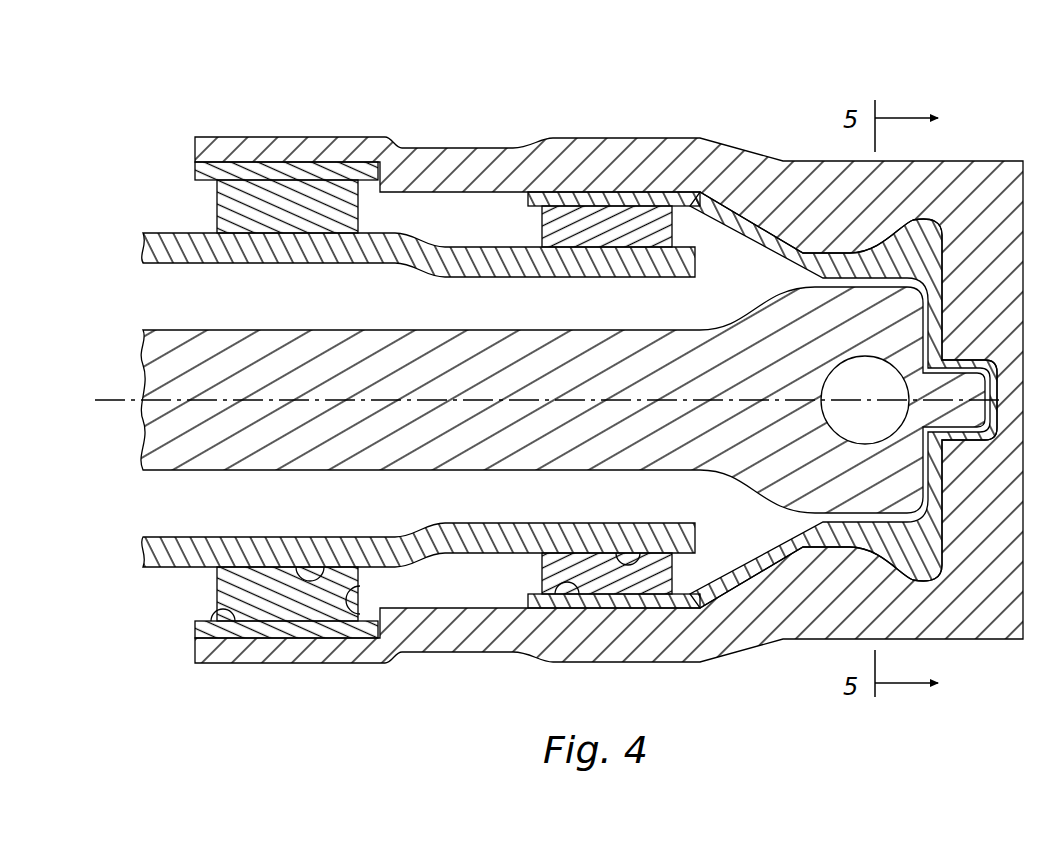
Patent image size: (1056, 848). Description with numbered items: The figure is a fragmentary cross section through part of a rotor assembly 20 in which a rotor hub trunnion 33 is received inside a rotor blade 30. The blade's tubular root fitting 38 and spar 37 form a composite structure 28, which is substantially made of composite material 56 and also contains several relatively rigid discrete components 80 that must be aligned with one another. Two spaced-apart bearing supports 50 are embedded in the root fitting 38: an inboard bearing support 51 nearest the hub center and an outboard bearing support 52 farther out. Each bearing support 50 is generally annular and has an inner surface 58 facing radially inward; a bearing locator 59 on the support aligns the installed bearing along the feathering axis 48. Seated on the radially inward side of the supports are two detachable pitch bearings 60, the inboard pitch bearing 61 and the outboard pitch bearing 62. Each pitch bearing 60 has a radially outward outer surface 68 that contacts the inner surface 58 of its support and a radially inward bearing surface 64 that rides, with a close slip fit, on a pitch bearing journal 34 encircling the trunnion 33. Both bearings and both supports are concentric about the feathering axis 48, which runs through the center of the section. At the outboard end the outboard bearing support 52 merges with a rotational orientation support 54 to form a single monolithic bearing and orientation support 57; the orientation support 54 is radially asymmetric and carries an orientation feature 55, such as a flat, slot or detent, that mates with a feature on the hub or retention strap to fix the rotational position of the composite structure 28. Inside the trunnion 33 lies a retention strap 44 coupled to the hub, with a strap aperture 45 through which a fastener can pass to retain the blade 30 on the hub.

The rotor assembly 20 is at (100, 78).
The composite structure 28 is at (155, 82).
The rotor blade 30 is at (210, 88).
The trunnion 33 is at (222, 262).
The pitch bearing journal 34 is at (316, 566).
The rotor blade spar 37 is at (265, 92).
The rotor blade root fitting 38 is at (318, 95).
The retention strap 44 is at (563, 409).
The strap aperture 45 is at (855, 440).
The feathering axis 48 is at (100, 400).
The bearing support 50 is at (465, 407).
The inboard bearing support 51 is at (292, 645).
The outboard bearing support 52 is at (578, 190).
The rotational orientation support 54 is at (868, 248).
The orientation feature 55 is at (958, 280).
The composite material 56 is at (611, 381).
The monolithic bearing and orientation support 57 is at (843, 367).
The inner surface 58 is at (260, 640).
The bearing locator 59 is at (368, 600).
The pitch bearing 60 is at (428, 400).
The inboard pitch bearing 61 is at (248, 567).
The outboard pitch bearing 62 is at (548, 555).
The bearing surface 64 is at (340, 566).
The outer surface 68 is at (213, 632).
The discrete component 80 is at (551, 407).